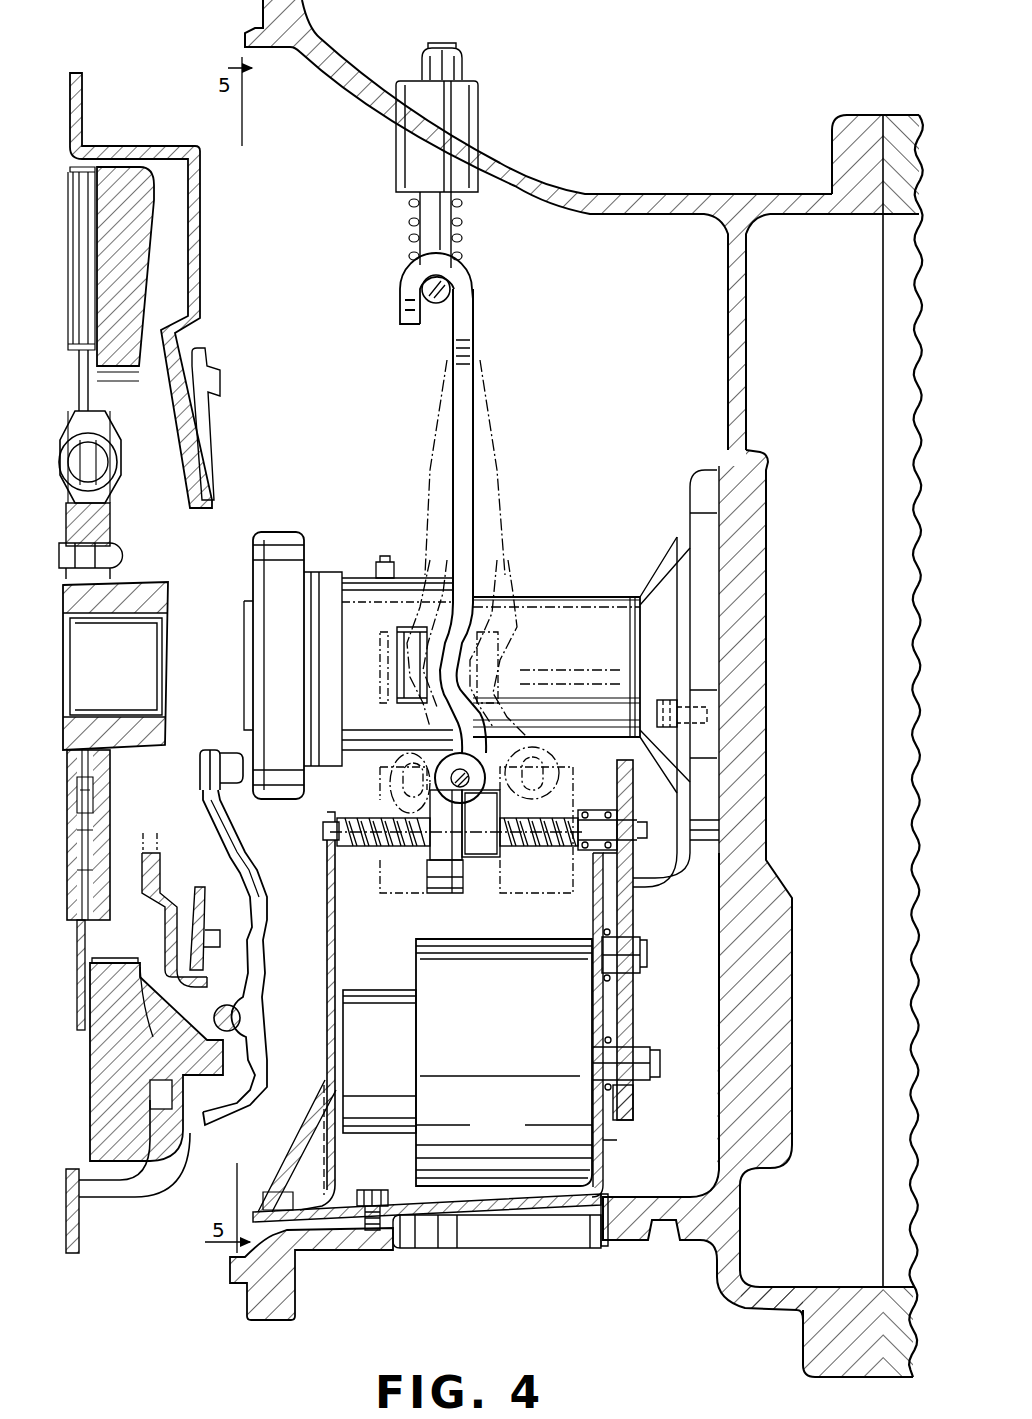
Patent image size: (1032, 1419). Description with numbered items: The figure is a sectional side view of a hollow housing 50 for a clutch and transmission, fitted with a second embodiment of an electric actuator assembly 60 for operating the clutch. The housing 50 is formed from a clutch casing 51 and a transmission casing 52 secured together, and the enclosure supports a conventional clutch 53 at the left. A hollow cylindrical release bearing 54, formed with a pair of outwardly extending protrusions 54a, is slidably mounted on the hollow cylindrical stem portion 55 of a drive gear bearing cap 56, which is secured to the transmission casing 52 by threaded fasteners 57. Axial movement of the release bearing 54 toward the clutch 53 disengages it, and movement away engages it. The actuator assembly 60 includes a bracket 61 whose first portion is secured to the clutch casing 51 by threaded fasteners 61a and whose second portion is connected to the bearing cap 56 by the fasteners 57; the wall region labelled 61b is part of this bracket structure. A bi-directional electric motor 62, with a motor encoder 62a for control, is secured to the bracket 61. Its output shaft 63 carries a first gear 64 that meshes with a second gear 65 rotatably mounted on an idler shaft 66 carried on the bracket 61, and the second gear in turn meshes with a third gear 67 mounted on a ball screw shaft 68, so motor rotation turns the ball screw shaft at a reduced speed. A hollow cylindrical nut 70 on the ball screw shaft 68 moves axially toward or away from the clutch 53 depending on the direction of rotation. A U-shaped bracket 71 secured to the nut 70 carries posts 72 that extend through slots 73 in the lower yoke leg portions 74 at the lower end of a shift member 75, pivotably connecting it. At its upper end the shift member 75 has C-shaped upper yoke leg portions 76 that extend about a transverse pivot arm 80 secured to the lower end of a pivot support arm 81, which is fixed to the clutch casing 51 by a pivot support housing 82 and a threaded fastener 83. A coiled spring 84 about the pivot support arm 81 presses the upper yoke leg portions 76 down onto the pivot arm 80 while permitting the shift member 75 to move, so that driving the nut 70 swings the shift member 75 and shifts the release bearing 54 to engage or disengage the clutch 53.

The housing 50 is at (684, 153).
The clutch casing 51 is at (598, 195).
The transmission casing 52 is at (902, 117).
The clutch 53 is at (229, 282).
The release bearing 54 is at (285, 535).
The protrusions 54a is at (404, 630).
The stem portion 55 is at (560, 615).
The drive gear bearing cap 56 is at (705, 468).
The threaded fasteners 57 is at (664, 700).
The electric actuator assembly 60 is at (634, 1172).
The bracket 61 is at (442, 1222).
The threaded fasteners 61a is at (373, 1190).
The housing wall 61b is at (326, 957).
The electric motor 62 is at (518, 1128).
The motor encoder 62a is at (356, 1050).
The output shaft 63 is at (656, 1066).
The first gear 64 is at (630, 1112).
The second gear 65 is at (634, 990).
The idler shaft 66 is at (648, 955).
The third gear 67 is at (634, 888).
The ball screw shaft 68 is at (368, 848).
The nut 70 is at (435, 893).
The bracket 71 is at (460, 885).
The posts 72 is at (452, 770).
The slots 73 is at (470, 790).
The lower yoke leg portions 74 is at (472, 728).
The shift member 75 is at (464, 412).
The upper yoke leg portions 76 is at (412, 271).
The pivot arm 80 is at (450, 290).
The pivot support arm 81 is at (452, 228).
The pivot support housing 82 is at (478, 112).
The threaded fastener 83 is at (460, 60).
The coiled spring 84 is at (408, 207).